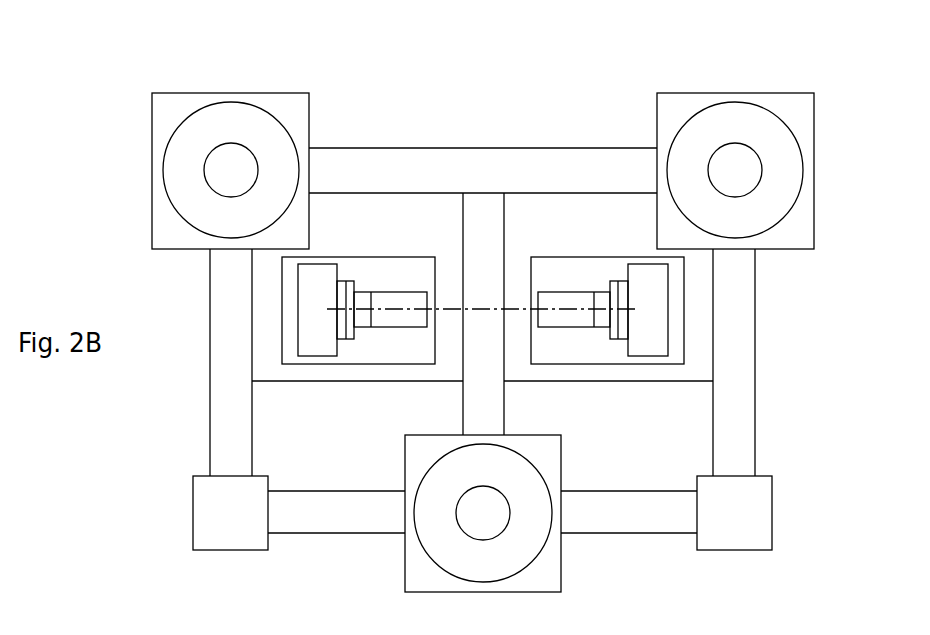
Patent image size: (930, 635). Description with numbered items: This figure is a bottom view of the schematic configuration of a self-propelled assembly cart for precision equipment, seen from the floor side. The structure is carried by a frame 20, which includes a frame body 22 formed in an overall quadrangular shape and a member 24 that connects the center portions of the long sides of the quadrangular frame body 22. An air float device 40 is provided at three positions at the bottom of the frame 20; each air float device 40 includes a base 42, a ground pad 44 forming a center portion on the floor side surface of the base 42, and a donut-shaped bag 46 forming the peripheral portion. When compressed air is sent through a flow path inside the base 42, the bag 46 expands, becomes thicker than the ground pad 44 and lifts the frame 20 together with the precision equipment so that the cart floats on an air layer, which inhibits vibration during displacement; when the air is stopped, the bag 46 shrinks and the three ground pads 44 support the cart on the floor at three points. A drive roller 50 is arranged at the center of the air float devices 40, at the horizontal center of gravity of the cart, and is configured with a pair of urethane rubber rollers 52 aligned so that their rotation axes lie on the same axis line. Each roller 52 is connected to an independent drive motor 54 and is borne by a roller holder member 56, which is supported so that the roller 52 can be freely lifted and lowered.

The frame 20 is at (482, 300).
The frame body 22 is at (567, 153).
The member 24 is at (507, 230).
The air float device 40 is at (483, 311).
The base 42 is at (297, 114).
The ground pad 44 is at (222, 162).
The donut-shaped bag 46 is at (232, 118).
The drive roller 50 is at (483, 329).
The roller 52 is at (318, 277).
The drive motor 54 is at (404, 298).
The roller holder member 56 is at (357, 287).